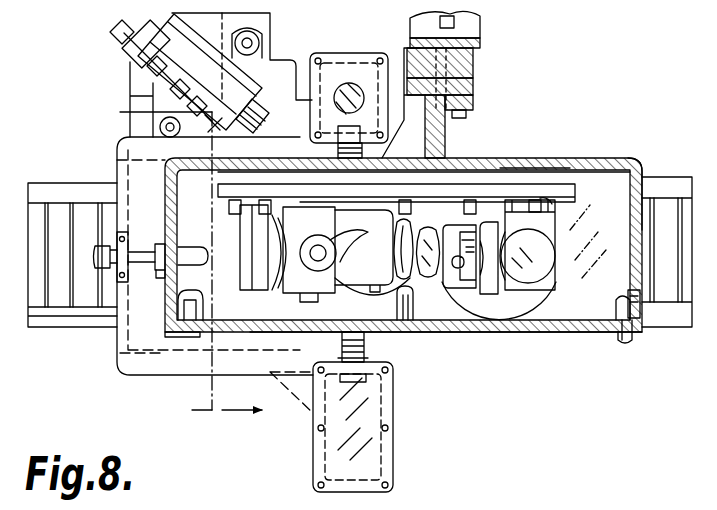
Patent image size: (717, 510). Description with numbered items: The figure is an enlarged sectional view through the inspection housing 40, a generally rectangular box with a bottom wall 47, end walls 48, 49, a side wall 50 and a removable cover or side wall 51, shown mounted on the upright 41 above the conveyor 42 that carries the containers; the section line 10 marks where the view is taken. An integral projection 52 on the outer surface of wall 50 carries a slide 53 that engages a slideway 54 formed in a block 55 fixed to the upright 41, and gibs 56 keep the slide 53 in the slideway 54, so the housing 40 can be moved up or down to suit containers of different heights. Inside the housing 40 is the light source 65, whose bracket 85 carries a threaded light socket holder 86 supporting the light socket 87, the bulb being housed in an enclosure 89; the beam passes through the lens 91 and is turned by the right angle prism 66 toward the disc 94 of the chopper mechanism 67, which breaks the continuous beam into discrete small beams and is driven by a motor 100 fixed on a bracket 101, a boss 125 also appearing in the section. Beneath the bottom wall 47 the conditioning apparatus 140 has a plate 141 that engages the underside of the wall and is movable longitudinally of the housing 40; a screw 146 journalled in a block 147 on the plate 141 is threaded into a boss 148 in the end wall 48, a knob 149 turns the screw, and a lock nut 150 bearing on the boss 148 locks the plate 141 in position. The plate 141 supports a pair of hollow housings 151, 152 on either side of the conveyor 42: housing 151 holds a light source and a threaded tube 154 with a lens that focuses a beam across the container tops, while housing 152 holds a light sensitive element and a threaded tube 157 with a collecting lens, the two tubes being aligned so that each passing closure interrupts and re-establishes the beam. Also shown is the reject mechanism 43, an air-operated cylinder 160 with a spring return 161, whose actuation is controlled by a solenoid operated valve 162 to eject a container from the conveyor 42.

The section line 10 is at (175, 261).
The housing 40 is at (614, 159).
The upright 41 is at (482, 24).
The conveyor 42 is at (660, 230).
The reject mechanism 43 is at (128, 70).
The bottom wall 47 is at (625, 282).
The end wall 48 is at (170, 290).
The end wall 49 is at (638, 244).
The side wall 50 is at (548, 160).
The removable cover 51 is at (545, 325).
The projection 52 is at (446, 149).
The slide 53 is at (474, 87).
The slideway 54 is at (403, 103).
The block 55 is at (474, 66).
The gibs 56 is at (474, 107).
The light source 65 is at (252, 262).
The prism 66 is at (451, 272).
The chopper mechanism 67 is at (488, 296).
The bracket 85 is at (308, 285).
The light socket holder 86 is at (322, 251).
The light socket 87 is at (278, 270).
The enclosure 89 is at (350, 278).
The lens 91 is at (399, 262).
The disc 94 is at (500, 322).
The motor 100 is at (540, 262).
The bracket 101 is at (556, 222).
The boss 125 is at (530, 168).
The conditioning apparatus 140 is at (122, 376).
The plate 141 is at (160, 345).
The screw 146 is at (142, 251).
The block 147 is at (120, 272).
The boss 148 is at (166, 255).
The knob 149 is at (96, 255).
The lock nut 150 is at (150, 282).
The hollow housing 151 is at (338, 78).
The hollow housing 152 is at (393, 445).
The threaded tube 154 is at (381, 153).
The threaded tube 157 is at (366, 345).
The air-operated cylinder 160 is at (258, 40).
The spring return 161 is at (200, 96).
The solenoid operated valve 162 is at (120, 36).